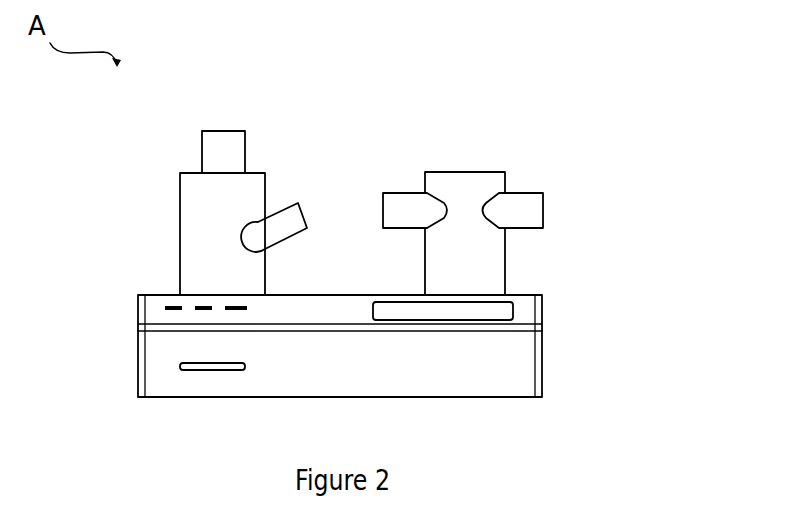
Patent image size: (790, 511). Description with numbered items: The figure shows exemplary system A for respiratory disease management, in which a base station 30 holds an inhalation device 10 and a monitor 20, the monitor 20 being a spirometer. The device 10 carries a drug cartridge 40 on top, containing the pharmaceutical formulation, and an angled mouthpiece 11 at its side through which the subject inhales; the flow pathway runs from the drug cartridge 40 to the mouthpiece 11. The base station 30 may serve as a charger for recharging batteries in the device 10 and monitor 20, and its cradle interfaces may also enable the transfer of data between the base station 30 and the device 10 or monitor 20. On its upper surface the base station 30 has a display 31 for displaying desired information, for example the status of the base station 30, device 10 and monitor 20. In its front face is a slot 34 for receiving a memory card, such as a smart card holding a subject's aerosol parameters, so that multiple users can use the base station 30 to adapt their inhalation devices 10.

The device 10 is at (237, 197).
The mouthpiece 11 is at (300, 204).
The monitor 20 is at (467, 203).
The base station 30 is at (544, 372).
The display 31 is at (502, 310).
The slot 34 is at (202, 377).
The drug cartridge 40 is at (204, 141).